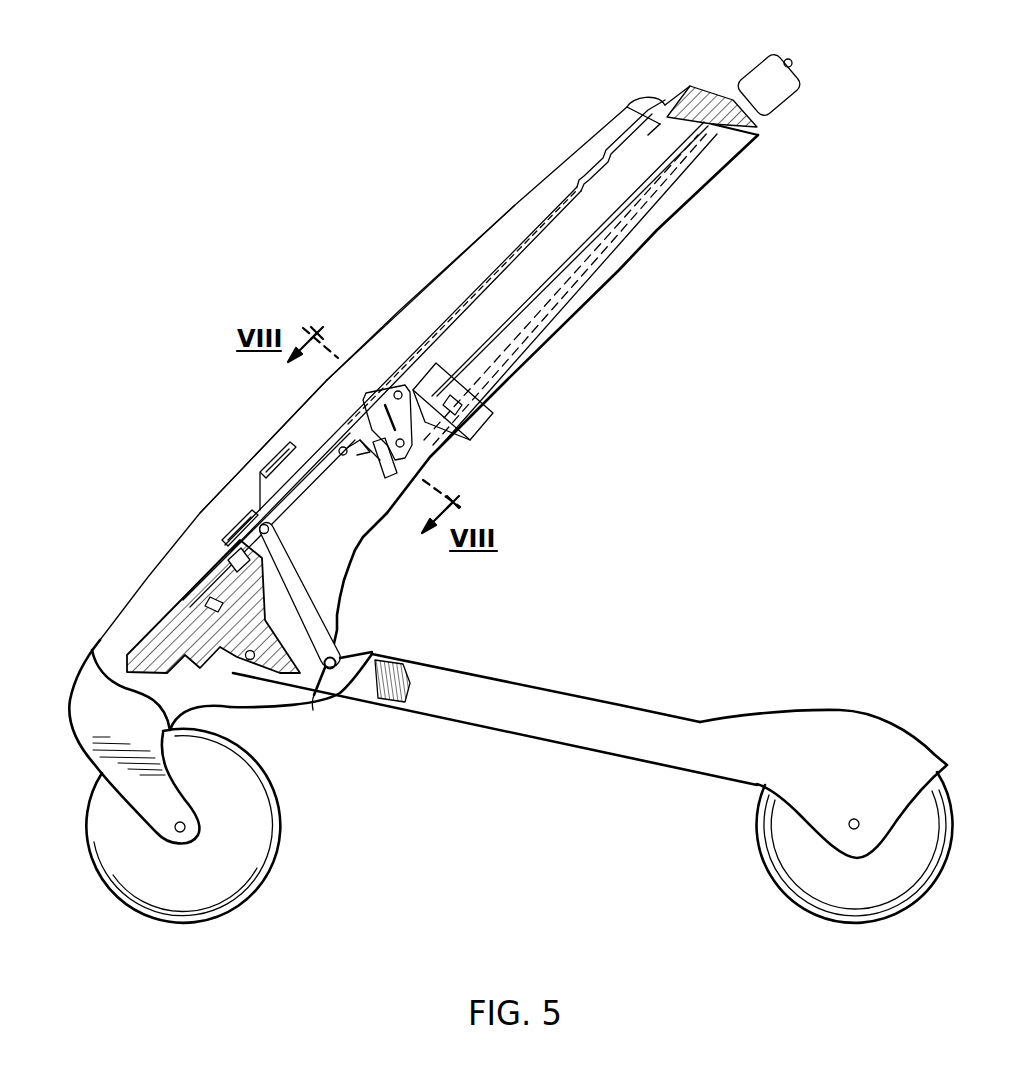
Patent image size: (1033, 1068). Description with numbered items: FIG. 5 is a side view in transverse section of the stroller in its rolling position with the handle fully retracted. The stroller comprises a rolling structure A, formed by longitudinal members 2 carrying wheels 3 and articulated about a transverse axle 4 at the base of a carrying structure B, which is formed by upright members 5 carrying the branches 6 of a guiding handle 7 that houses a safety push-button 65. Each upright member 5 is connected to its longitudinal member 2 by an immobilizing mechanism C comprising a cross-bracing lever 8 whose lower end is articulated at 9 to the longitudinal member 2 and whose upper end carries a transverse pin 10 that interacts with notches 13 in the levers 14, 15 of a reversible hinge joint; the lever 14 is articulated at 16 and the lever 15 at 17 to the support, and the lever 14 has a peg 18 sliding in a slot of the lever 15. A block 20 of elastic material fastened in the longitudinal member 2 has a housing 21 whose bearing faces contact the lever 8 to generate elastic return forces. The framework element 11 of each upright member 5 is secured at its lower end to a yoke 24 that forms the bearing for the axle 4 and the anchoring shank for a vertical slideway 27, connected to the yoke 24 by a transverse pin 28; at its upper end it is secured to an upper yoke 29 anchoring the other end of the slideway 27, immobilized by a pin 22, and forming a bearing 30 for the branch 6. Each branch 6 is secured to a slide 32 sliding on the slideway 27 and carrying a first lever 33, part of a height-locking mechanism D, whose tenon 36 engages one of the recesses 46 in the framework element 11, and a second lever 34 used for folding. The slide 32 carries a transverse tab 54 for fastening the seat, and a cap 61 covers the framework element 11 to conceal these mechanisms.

The longitudinal member 2 is at (638, 728).
The wheel 3 is at (763, 830).
The transverse axle 4 is at (257, 652).
The upright member 5 is at (440, 308).
The branch 6 is at (624, 225).
The guiding handle 7 is at (795, 84).
The cross-bracing lever 8 is at (337, 642).
The articulation 9 is at (350, 650).
The transverse pin 10 is at (288, 518).
The framework element 11 is at (513, 250).
The notch 13 is at (346, 457).
The lever 14 is at (280, 507).
The lever 15 is at (320, 463).
The articulation 16 is at (255, 540).
The articulation 17 is at (357, 430).
The peg 18 is at (287, 483).
The block of elastic material 20 is at (353, 685).
The housing 21 is at (374, 654).
The pin 22 is at (657, 160).
The yoke 24 is at (162, 637).
The vertical slideway 27 is at (625, 143).
The transverse pin 28 is at (243, 575).
The upper yoke 29 is at (690, 86).
The bearing 30 is at (738, 126).
The slide 32 is at (482, 402).
The first lever 33 is at (447, 440).
The second lever 34 is at (374, 478).
The tenon 36 is at (366, 390).
The recess 46 is at (566, 181).
The transverse tab 54 is at (465, 420).
The cap 61 is at (452, 260).
The safety push-button 65 is at (792, 60).
The rolling structure A is at (784, 683).
The carrying structure B is at (648, 328).
The immobilizing mechanism C is at (322, 577).
The height-locking mechanism D is at (377, 392).